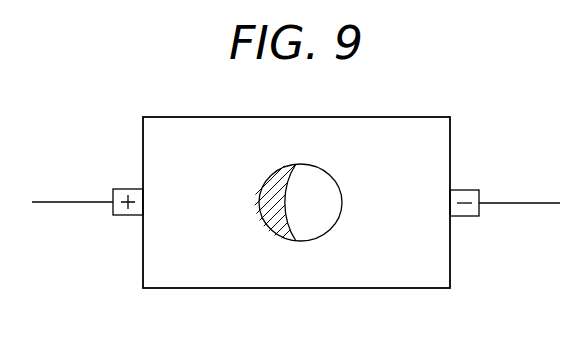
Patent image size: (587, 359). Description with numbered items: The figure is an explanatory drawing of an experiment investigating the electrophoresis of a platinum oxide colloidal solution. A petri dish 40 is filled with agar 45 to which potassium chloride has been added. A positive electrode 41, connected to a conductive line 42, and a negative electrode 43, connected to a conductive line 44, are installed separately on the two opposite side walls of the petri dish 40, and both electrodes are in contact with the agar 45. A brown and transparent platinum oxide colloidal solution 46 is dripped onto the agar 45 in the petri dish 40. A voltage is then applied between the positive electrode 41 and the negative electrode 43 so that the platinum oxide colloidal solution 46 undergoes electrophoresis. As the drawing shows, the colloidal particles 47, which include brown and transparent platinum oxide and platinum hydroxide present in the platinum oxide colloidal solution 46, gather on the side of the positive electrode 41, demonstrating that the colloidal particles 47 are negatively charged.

The petri dish 40 is at (398, 289).
The positive electrode 41 is at (127, 189).
The conductive line 42 is at (73, 203).
The negative electrode 43 is at (465, 190).
The conductive line 44 is at (523, 204).
The agar 45 is at (203, 273).
The platinum oxide colloidal solution 46 is at (330, 172).
The colloidal particles 47 is at (262, 196).